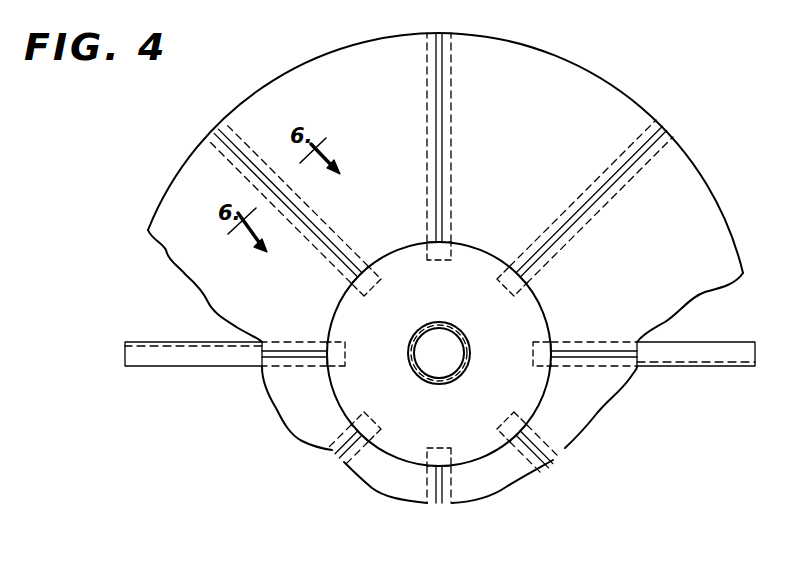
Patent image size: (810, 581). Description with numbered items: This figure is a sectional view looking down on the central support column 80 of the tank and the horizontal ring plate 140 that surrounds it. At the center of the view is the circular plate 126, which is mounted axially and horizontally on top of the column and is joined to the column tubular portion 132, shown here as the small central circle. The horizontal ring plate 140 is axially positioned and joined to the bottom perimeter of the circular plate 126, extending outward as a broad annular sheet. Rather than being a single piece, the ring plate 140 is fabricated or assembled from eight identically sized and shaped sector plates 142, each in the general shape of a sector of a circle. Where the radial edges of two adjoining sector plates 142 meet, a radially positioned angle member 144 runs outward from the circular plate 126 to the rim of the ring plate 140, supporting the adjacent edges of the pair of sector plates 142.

The column 80 is at (433, 326).
The circular plate 126 is at (480, 418).
The column tubular portion 132 is at (412, 368).
The horizontal ring plate 140 is at (618, 84).
The sector plates 142 is at (289, 308).
The angle member 144 is at (446, 33).